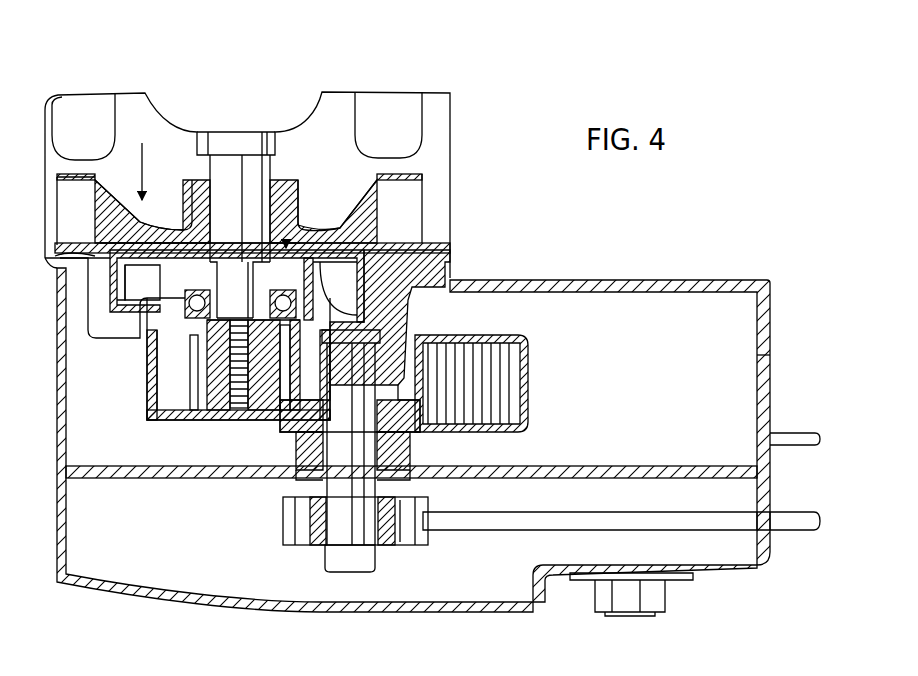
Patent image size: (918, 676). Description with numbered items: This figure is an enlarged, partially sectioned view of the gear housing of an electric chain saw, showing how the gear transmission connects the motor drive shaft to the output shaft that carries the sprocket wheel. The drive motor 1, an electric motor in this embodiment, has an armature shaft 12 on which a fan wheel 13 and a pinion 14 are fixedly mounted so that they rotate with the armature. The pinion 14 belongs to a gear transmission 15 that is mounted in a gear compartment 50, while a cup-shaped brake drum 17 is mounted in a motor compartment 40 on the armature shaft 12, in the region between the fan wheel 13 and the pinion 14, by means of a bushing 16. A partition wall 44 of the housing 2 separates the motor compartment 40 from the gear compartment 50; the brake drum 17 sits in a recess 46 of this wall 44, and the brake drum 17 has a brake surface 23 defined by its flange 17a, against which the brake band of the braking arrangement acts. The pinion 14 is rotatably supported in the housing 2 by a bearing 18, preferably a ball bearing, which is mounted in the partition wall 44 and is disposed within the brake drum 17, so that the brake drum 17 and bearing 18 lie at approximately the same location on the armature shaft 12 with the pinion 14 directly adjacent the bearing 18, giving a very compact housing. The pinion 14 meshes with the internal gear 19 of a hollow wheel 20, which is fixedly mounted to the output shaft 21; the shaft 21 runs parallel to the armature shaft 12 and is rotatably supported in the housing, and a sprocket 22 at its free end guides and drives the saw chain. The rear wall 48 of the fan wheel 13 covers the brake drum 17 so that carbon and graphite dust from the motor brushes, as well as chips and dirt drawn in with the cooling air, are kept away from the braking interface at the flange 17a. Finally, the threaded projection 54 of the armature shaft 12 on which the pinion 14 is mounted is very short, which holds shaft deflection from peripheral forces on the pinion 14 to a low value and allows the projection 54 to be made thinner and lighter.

The drive motor 1 is at (342, 118).
The housing 2 is at (400, 336).
The armature shaft 12 is at (272, 147).
The fan wheel 13 is at (408, 210).
The pinion 14 is at (212, 372).
The gear transmission 15 is at (186, 446).
The bushing 16 is at (286, 243).
The brake drum 17 is at (432, 245).
The flange 17a is at (117, 296).
The bearing 18 is at (185, 302).
The internal gear 19 is at (513, 370).
The hollow wheel 20 is at (518, 393).
The output shaft 21 is at (336, 462).
The sprocket 22 is at (303, 533).
The brake surface 23 is at (123, 252).
The motor compartment 40 is at (452, 140).
The partition wall 44 is at (45, 262).
The recess 46 is at (128, 340).
The rear wall 48 is at (85, 257).
The gear compartment 50 is at (718, 478).
The threaded projection 54 is at (243, 408).